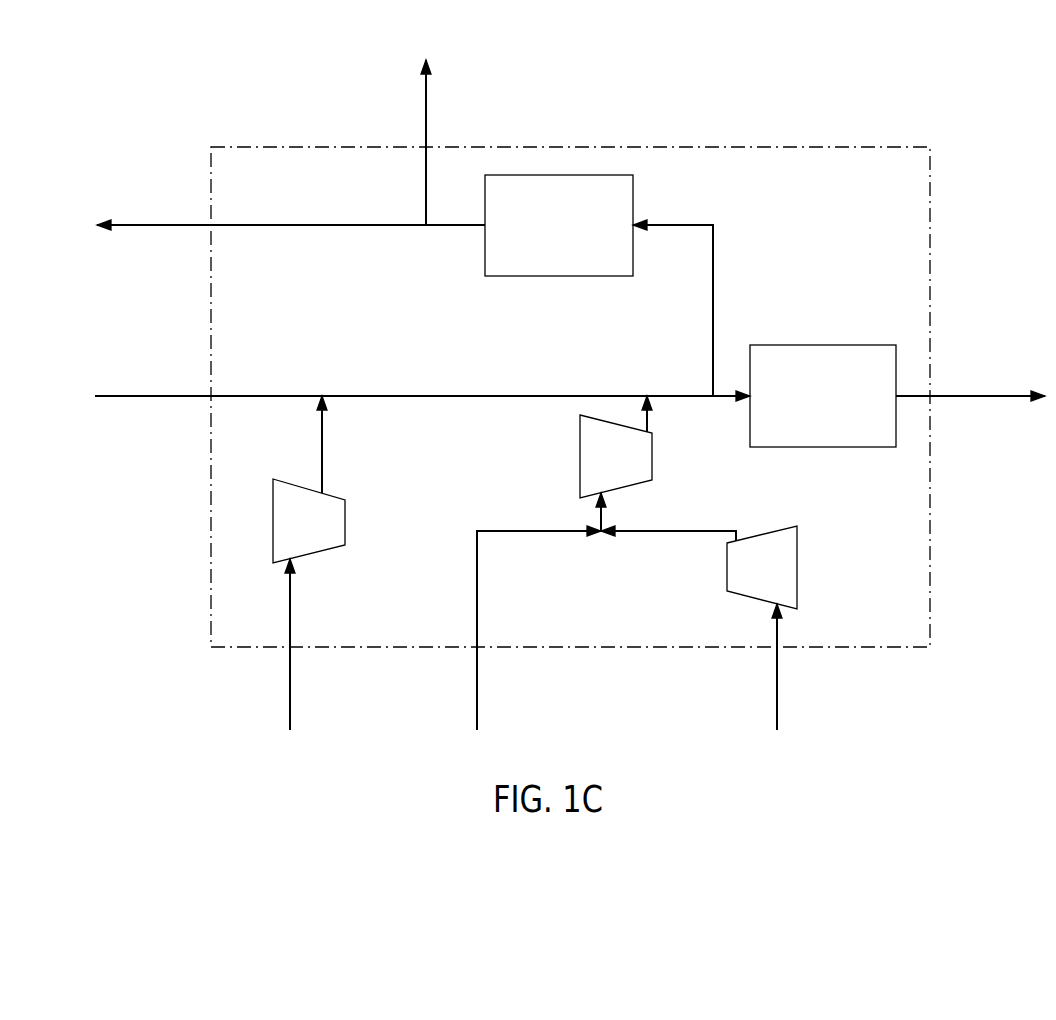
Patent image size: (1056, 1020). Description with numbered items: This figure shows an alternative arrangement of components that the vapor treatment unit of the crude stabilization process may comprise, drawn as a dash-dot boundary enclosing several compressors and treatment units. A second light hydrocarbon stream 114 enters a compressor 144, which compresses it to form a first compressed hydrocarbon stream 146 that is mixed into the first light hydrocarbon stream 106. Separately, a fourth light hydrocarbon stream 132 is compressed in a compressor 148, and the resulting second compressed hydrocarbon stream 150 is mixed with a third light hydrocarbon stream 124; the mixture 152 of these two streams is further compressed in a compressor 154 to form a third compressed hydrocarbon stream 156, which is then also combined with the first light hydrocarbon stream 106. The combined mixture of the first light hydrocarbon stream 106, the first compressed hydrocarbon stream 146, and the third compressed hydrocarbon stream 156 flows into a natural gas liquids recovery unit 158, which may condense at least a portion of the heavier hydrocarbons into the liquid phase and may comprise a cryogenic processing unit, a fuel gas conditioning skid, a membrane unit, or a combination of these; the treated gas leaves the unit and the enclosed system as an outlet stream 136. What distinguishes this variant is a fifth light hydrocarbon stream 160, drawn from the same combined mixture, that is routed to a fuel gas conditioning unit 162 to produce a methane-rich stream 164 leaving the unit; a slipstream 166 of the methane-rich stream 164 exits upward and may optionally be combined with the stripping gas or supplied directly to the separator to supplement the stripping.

The first light hydrocarbon stream 106 is at (147, 394).
The product gas outlet stream 136 is at (990, 394).
The methane-rich stream 164 is at (145, 223).
The slipstream 166 is at (427, 105).
The fuel gas conditioning unit 162 is at (550, 278).
The fifth light hydrocarbon stream 160 is at (714, 255).
The natural gas liquids recovery unit 158 is at (835, 344).
The compressor 144 is at (346, 522).
The first compressed hydrocarbon stream 146 is at (323, 446).
The second light hydrocarbon stream 114 is at (291, 700).
The compressor 154 is at (653, 457).
The third compressed hydrocarbon stream 156 is at (648, 421).
The mixture 152 is at (602, 515).
The third light hydrocarbon stream 124 is at (478, 700).
The second compressed hydrocarbon stream 150 is at (670, 538).
The compressor 148 is at (798, 568).
The fourth light hydrocarbon stream 132 is at (778, 693).